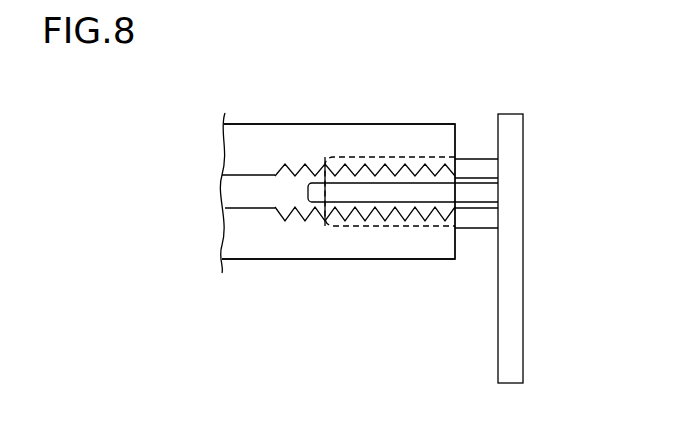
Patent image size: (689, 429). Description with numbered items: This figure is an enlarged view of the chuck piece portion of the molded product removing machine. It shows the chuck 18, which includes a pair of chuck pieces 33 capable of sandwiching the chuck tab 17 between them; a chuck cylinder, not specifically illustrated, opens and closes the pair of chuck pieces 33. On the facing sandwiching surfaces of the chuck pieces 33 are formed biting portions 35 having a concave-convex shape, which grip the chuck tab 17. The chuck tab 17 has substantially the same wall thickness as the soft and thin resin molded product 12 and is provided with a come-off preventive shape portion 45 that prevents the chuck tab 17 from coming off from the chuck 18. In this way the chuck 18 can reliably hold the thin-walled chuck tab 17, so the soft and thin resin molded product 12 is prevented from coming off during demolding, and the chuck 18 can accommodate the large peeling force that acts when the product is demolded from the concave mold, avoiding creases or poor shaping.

The soft and thin resin molded product 12 is at (523, 126).
The chuck tab 17 is at (471, 176).
The chuck 18 is at (355, 101).
The chuck pieces 33 is at (279, 119).
The biting portions 35 is at (284, 203).
The come-off preventive shape portion 45 is at (477, 230).